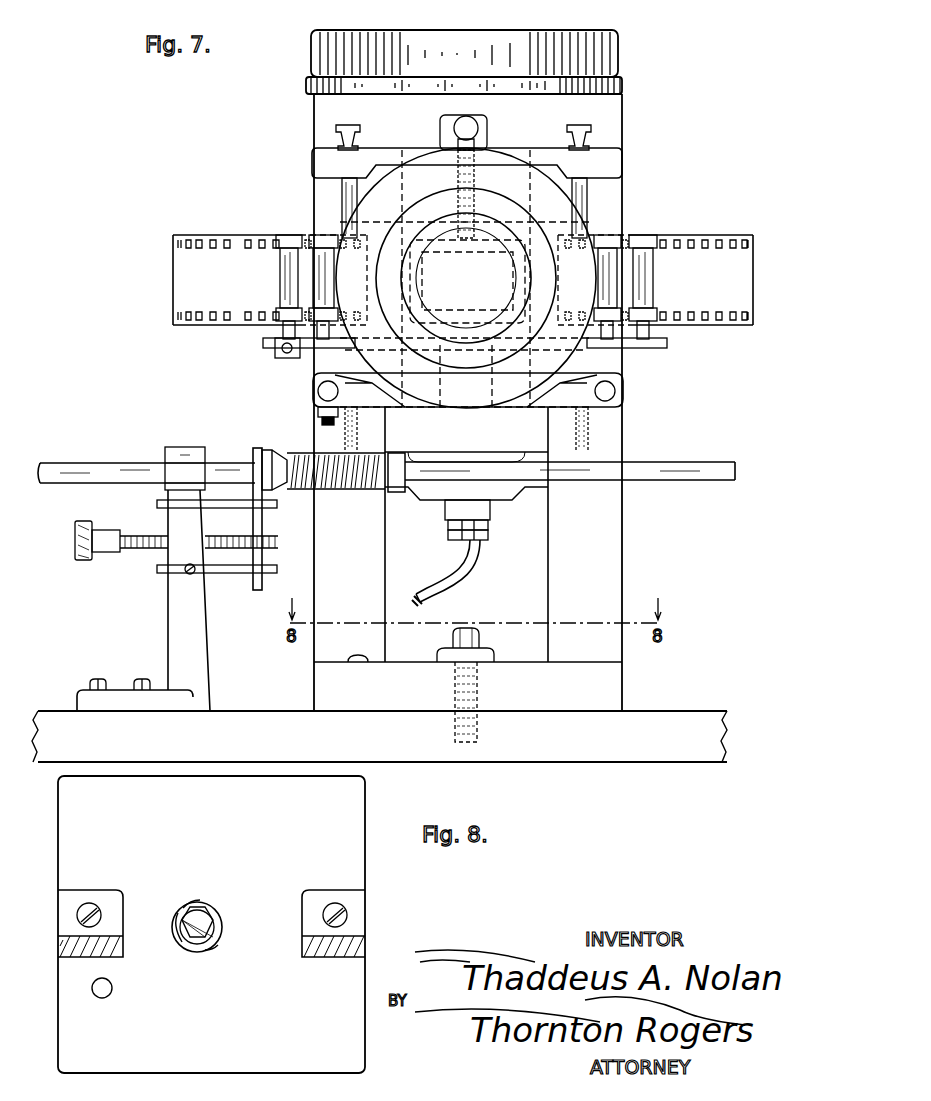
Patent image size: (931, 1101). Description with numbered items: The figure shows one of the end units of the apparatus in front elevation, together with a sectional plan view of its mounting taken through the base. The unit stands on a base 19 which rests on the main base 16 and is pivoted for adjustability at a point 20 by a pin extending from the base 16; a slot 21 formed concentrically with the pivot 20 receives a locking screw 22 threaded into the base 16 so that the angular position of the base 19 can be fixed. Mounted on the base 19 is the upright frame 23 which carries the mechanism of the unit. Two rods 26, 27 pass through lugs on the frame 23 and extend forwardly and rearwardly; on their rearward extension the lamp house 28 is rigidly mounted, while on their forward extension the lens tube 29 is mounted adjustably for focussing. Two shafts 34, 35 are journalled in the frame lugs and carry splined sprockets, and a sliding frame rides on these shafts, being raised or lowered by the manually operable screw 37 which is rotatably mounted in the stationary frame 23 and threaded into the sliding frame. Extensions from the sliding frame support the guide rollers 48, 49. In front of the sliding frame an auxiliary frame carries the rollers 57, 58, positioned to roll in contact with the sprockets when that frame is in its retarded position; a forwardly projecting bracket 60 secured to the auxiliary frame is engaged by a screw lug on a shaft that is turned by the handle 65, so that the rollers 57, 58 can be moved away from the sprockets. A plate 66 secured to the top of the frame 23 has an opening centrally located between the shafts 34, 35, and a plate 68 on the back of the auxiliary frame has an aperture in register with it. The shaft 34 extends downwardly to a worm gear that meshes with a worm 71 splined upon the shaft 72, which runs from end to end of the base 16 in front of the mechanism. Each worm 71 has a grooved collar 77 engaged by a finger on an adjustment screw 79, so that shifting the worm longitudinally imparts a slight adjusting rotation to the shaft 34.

In FIG. 7, the lamp house 28 is at (612, 108).
In FIG. 7, the manually operable screw 37 is at (466, 130).
In FIG. 7, the plate 68 is at (425, 148).
In FIG. 7, the plate 66 is at (512, 150).
In FIG. 7, the shaft 34 is at (346, 200).
In FIG. 7, the shaft 35 is at (582, 196).
In FIG. 7, the lens tube 29 is at (497, 228).
In FIG. 7, the forwardly projecting bracket 60 is at (478, 368).
In FIG. 7, the guide roller 48 is at (287, 265).
In FIG. 7, the guide roller 49 is at (647, 264).
In FIG. 7, the roller 57 is at (323, 282).
In FIG. 7, the roller 58 is at (620, 282).
In FIG. 7, the handle 65 is at (272, 352).
In FIG. 7, the rod 26 is at (317, 390).
In FIG. 7, the rod 27 is at (616, 390).
In FIG. 7, the shaft 72 is at (90, 463).
In FIG. 7, the grooved collar 77 is at (258, 447).
In FIG. 7, the worm 71 is at (340, 490).
In FIG. 7, the adjustment screw 79 is at (82, 541).
In FIG. 7, the upright frame 23 is at (622, 533).
In FIG. 8, the upright frame 23 is at (318, 950).
In FIG. 7, the base 19 is at (527, 686).
In FIG. 8, the base 19 is at (353, 866).
In FIG. 7, the pivot point 20 is at (356, 664).
In FIG. 8, the pivot point 20 is at (108, 996).
In FIG. 7, the slot 21 is at (480, 690).
In FIG. 8, the slot 21 is at (180, 905).
In FIG. 7, the locking screw 22 is at (480, 730).
In FIG. 8, the locking screw 22 is at (213, 916).
In FIG. 7, the base 16 is at (586, 752).